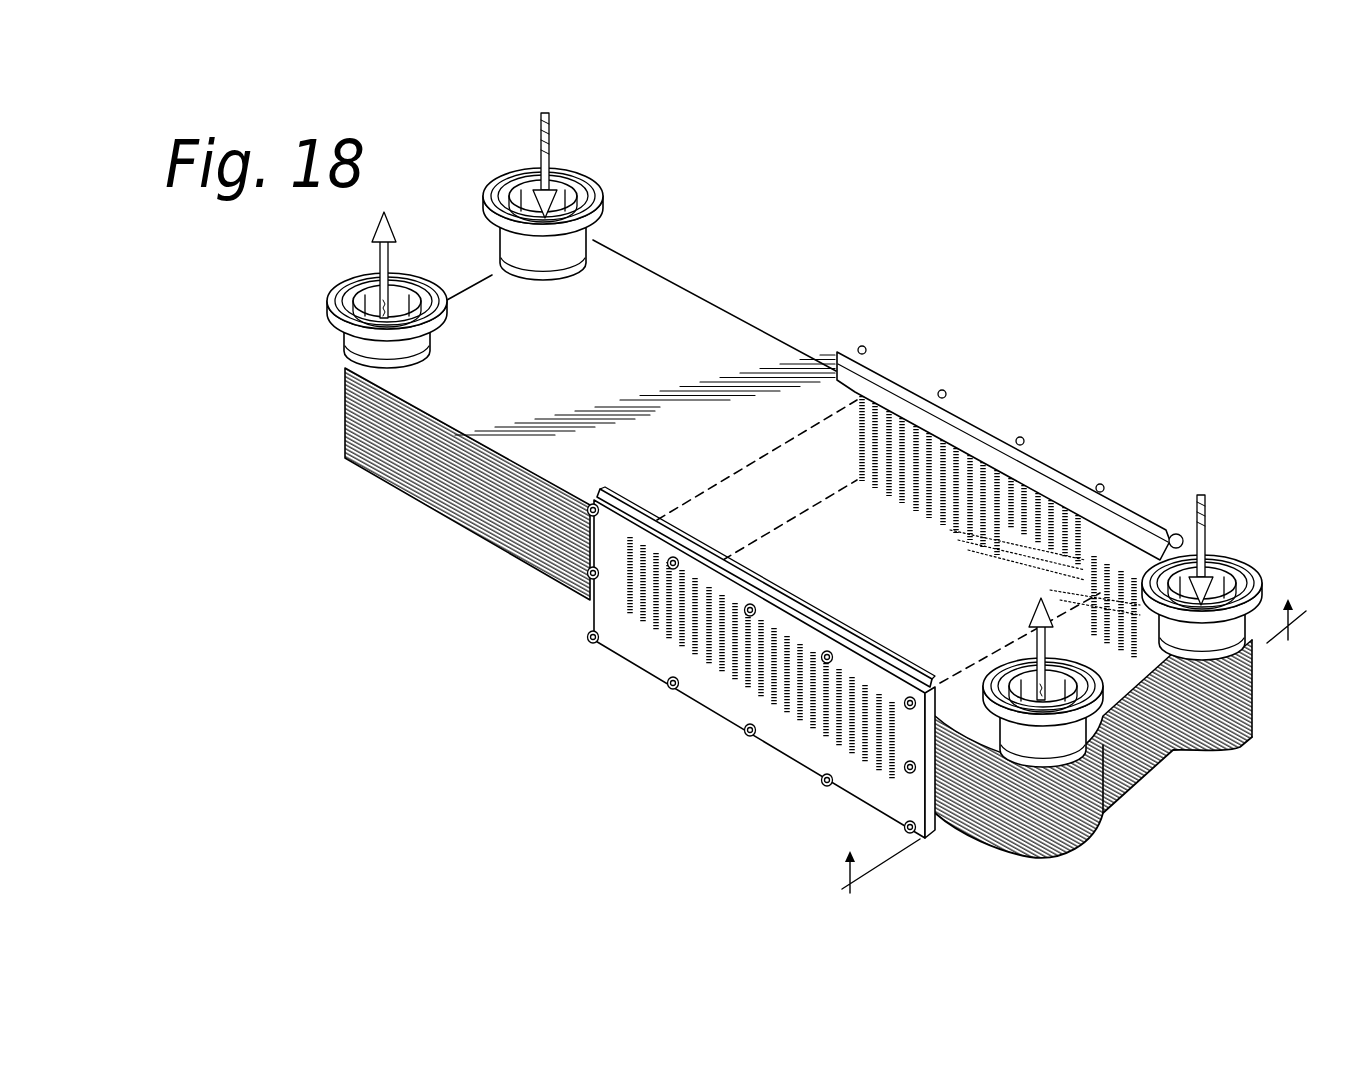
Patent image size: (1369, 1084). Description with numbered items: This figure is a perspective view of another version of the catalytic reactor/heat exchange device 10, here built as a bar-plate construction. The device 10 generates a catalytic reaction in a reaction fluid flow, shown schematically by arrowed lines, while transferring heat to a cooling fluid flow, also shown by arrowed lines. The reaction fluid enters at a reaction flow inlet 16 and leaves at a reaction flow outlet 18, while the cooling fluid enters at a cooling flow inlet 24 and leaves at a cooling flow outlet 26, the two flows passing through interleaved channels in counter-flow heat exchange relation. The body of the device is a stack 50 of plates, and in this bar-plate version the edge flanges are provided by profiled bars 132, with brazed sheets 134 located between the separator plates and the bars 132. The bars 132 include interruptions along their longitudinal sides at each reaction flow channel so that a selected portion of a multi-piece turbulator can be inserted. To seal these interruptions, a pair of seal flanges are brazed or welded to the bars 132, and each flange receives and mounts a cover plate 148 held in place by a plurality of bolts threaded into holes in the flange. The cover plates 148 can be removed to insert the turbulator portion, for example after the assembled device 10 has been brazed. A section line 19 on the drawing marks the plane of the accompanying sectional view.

The catalytic reactor/heat exchange device 10 is at (846, 224).
The reaction flow inlet 16 is at (582, 196).
The reaction flow outlet 18 is at (1039, 682).
The section line 19- 19 is at (1072, 734).
The cooling flow inlet 24 is at (1235, 577).
The cooling flow outlet 26 is at (359, 290).
The stack 50 is at (329, 340).
The profiled bars 132 is at (1084, 851).
The brazed sheets 134 is at (1104, 836).
The cover plate 148 is at (864, 572).